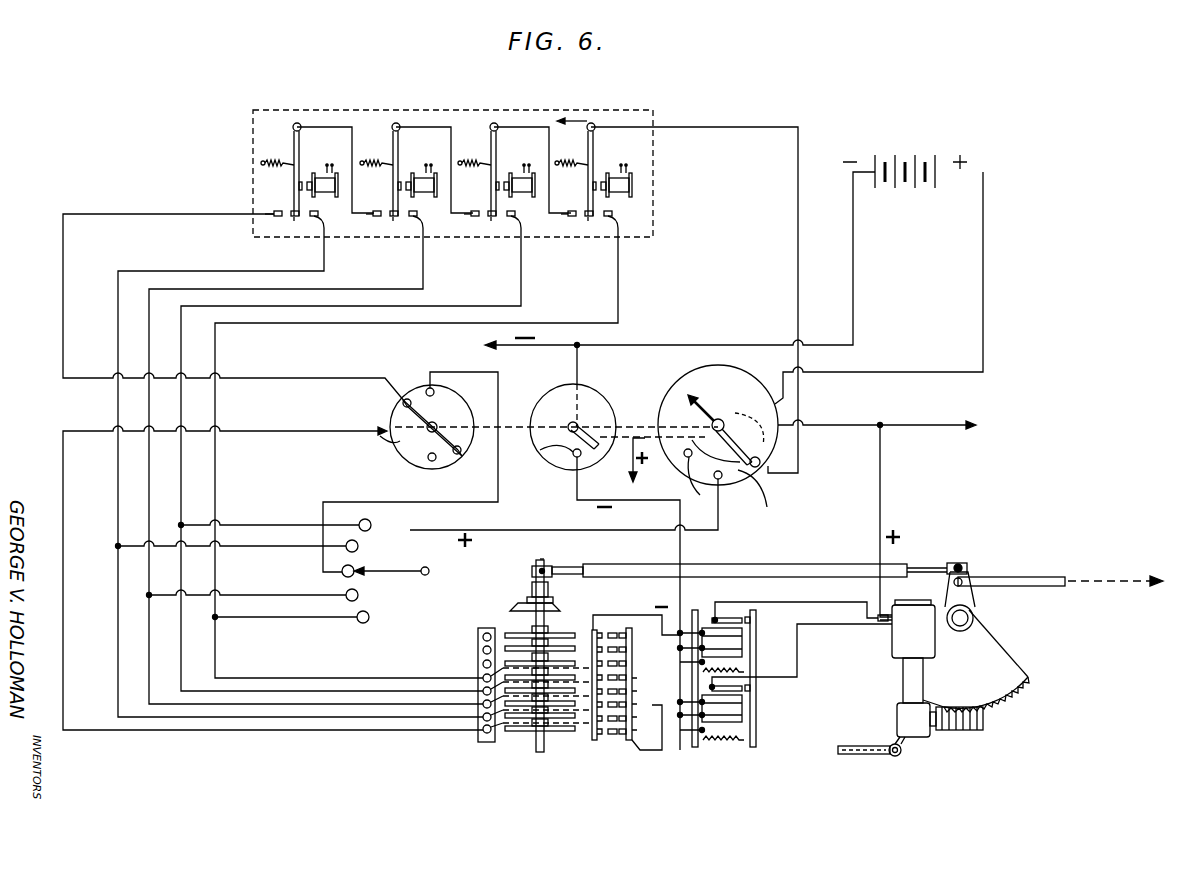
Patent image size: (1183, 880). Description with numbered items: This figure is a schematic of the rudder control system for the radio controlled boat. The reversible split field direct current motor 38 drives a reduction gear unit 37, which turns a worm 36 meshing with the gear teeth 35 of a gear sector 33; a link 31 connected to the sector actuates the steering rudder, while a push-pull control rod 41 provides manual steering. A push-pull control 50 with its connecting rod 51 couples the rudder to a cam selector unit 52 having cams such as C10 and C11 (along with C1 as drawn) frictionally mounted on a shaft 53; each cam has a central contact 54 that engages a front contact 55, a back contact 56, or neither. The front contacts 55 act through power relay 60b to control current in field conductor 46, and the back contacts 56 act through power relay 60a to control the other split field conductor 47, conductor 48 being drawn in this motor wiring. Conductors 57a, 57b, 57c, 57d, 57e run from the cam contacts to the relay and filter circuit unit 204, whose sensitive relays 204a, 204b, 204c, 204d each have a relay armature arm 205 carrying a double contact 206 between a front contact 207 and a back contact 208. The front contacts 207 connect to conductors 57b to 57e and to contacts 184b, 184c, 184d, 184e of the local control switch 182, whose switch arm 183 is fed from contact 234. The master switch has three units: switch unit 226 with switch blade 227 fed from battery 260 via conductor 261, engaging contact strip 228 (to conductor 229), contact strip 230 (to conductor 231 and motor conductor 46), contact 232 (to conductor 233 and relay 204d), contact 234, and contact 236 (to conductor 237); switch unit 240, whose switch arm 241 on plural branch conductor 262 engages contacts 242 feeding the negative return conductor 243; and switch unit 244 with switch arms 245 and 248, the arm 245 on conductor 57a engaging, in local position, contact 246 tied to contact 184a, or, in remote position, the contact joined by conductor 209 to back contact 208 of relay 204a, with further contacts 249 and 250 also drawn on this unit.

The relay and filter circuit unit 204 is at (654, 218).
The sensitive relay 204a is at (330, 100).
The sensitive relay 204b is at (426, 100).
The sensitive relay 204c is at (522, 100).
The sensitive relay 204d is at (618, 100).
The relay armature arm 205 is at (285, 178).
The double contact 206 is at (293, 223).
The front contact 207 is at (318, 228).
The back contact 208 is at (270, 219).
The conductor 209 is at (60, 262).
The conductor 57a is at (302, 717).
The conductor 57b is at (326, 262).
The conductor 57c is at (425, 284).
The conductor 57d is at (522, 290).
The conductor 57e is at (232, 677).
The conductor 233 is at (712, 131).
The battery 260 is at (900, 158).
The conductor 261 is at (988, 300).
The plural branch conductor 262 is at (580, 380).
The conductor 231 is at (855, 415).
The field conductor 46 is at (882, 512).
The switch unit 244 is at (392, 430).
The switch arm 245 is at (432, 428).
The contact 246 is at (436, 393).
The switch arm 248 is at (415, 410).
The switch contact 249 is at (458, 455).
The switch contact 250 is at (432, 462).
The switch unit 240 is at (600, 408).
The conductor 229 is at (614, 422).
The switch arm 241 is at (553, 459).
The contacts 242 is at (563, 480).
The conductor 243 is at (572, 495).
The switch blade 227 is at (718, 424).
The contact strip 228 is at (698, 472).
The switch unit 226 is at (760, 478).
The contact 232 is at (760, 463).
The contact 234 is at (723, 482).
The contact strip 230 is at (757, 501).
The contact 236 is at (702, 509).
The conductor 237 is at (632, 472).
The switch contact 184a is at (341, 571).
The switch contact 184b is at (360, 546).
The switch contact 184c is at (346, 597).
The switch contact 184d is at (362, 519).
The switch contact 184e is at (357, 622).
The switch arm 183 is at (390, 571).
The local control switch 182 is at (424, 577).
The connecting rod 51 is at (531, 568).
The cam selector unit 52 is at (565, 618).
The shaft 53 is at (516, 598).
The central contact 54 is at (613, 740).
The front contact 55 is at (593, 742).
The back contact 56 is at (641, 751).
The cam C10 is at (516, 738).
The cam C11 is at (566, 718).
The cam C1 is at (581, 656).
The power relay 60a is at (745, 708).
The power relay 60b is at (735, 646).
The split field conductor 47 is at (797, 660).
The conductor 48 is at (770, 602).
The reversible split field direct current motor 38 is at (930, 655).
The reduction gear unit 37 is at (917, 730).
The worm 36 is at (968, 730).
The gear teeth 35 is at (1019, 688).
The gear sector 33 is at (1004, 657).
The link 31 is at (1000, 578).
The push-pull control 50 is at (945, 566).
The push-pull control rod 41 is at (845, 748).